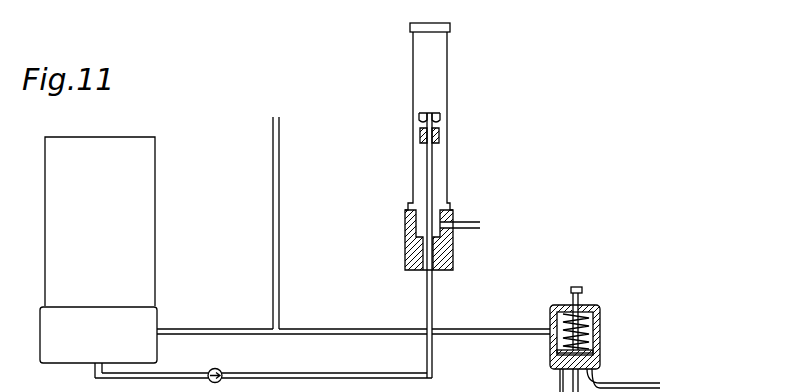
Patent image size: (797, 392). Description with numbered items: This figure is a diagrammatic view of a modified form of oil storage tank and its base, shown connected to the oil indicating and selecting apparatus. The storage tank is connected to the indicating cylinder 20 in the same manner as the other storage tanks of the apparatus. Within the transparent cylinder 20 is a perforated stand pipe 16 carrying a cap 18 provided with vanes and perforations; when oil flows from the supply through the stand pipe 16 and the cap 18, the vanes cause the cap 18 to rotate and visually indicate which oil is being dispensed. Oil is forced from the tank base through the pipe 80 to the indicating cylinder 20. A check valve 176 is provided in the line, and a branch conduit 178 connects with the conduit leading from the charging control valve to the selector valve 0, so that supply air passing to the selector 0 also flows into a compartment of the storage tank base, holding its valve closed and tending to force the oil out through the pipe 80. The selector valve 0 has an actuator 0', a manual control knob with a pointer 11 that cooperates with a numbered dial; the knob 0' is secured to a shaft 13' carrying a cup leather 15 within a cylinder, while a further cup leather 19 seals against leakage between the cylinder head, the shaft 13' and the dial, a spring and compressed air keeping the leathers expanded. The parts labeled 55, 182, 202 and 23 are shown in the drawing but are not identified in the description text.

The tank 55 is at (152, 249).
The branch conduit 178 is at (198, 329).
The check valve 176 is at (222, 370).
The pipe 202 is at (155, 378).
The pipe 182 is at (100, 378).
The transparent cylinder 20 is at (447, 171).
The stand pipe 16 is at (433, 203).
The cap 18 is at (440, 140).
The pipe 80 is at (432, 298).
The selector valve 0 is at (590, 337).
The pointer 11 is at (580, 293).
The actuator 0' is at (588, 284).
The shaft 13' is at (600, 331).
The valve disk 23 is at (593, 353).
The cup leather 19 is at (560, 315).
The cup leather 15 is at (553, 357).